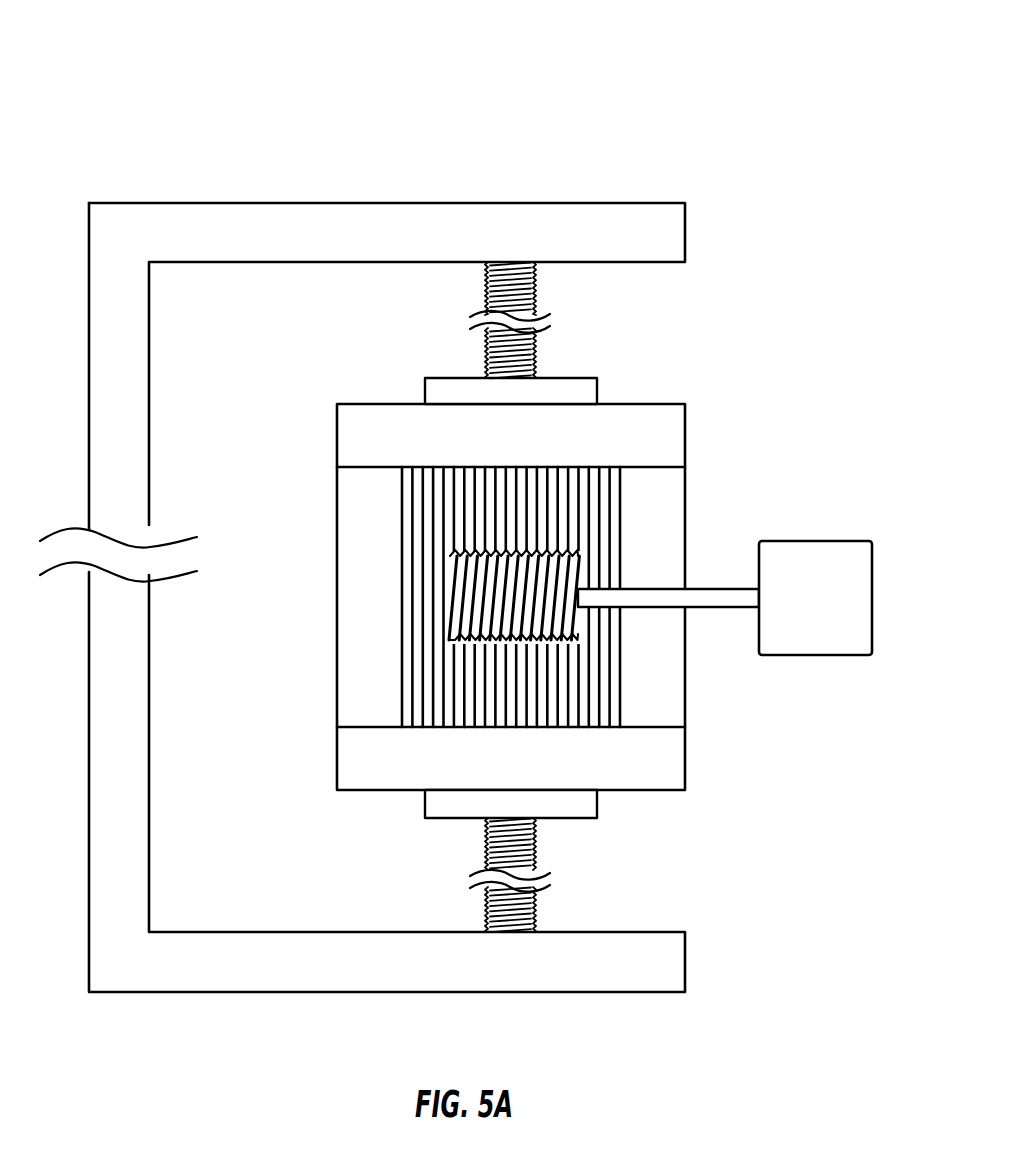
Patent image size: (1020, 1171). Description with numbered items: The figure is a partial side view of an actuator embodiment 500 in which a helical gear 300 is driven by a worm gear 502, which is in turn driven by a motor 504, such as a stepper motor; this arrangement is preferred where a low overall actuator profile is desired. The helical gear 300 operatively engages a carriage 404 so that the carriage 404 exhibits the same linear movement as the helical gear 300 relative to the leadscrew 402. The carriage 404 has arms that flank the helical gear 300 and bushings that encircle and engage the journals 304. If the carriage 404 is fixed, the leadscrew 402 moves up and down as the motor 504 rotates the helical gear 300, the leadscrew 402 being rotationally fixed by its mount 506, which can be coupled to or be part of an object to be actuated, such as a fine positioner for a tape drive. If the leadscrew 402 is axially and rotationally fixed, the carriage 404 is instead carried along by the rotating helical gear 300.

The embodiment 500 is at (725, 63).
The mount 506 is at (686, 960).
The carriage 404 is at (348, 558).
The helical gear 300 is at (400, 705).
The worm gear 502 is at (567, 578).
The motor 504 is at (842, 541).
The journals 304 is at (598, 389).
The leadscrew 402 is at (535, 286).